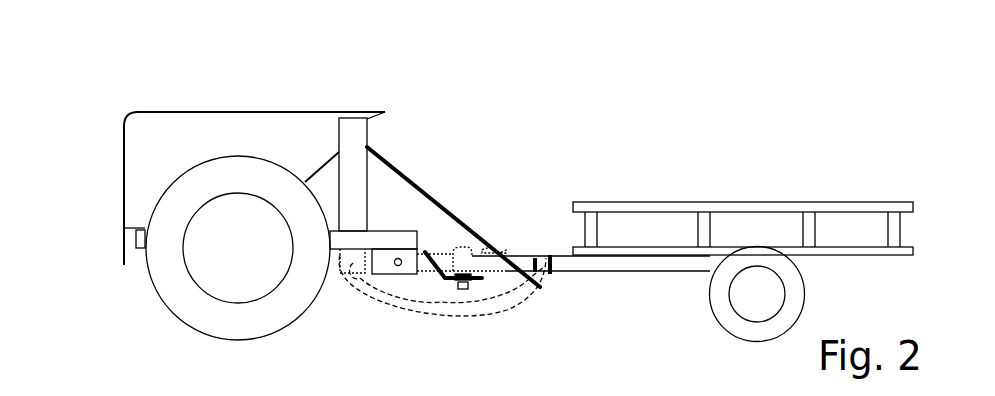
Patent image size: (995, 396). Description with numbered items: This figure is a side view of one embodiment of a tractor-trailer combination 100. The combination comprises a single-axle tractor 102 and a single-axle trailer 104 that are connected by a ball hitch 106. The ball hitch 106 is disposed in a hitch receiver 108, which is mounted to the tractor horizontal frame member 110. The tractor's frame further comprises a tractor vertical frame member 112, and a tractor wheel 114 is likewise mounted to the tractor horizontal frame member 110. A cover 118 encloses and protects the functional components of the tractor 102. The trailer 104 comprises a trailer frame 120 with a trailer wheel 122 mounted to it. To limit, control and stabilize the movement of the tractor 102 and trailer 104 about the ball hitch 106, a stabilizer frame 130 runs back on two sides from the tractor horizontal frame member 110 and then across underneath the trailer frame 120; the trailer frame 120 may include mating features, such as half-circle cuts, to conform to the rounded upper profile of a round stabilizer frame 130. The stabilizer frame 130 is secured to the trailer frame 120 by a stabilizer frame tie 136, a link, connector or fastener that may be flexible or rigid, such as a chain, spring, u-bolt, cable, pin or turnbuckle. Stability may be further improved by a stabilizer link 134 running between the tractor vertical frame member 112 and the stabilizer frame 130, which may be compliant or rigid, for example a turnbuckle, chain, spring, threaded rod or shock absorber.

The tractor-trailer combination 100 is at (511, 82).
The single-axle tractor 102 is at (257, 110).
The single-axle trailer 104 is at (718, 207).
The ball hitch 106 is at (456, 250).
The hitch receiver 108 is at (397, 276).
The tractor horizontal frame member 110 is at (377, 230).
The tractor vertical frame member 112 is at (369, 143).
The tractor wheel 114 is at (238, 155).
The cover 118 is at (123, 173).
The trailer frame 120 is at (687, 273).
The trailer wheel 122 is at (712, 303).
The stabilizer frame 130 is at (460, 320).
The stabilizer link 134 is at (415, 178).
The stabilizer frame tie 136 is at (550, 257).